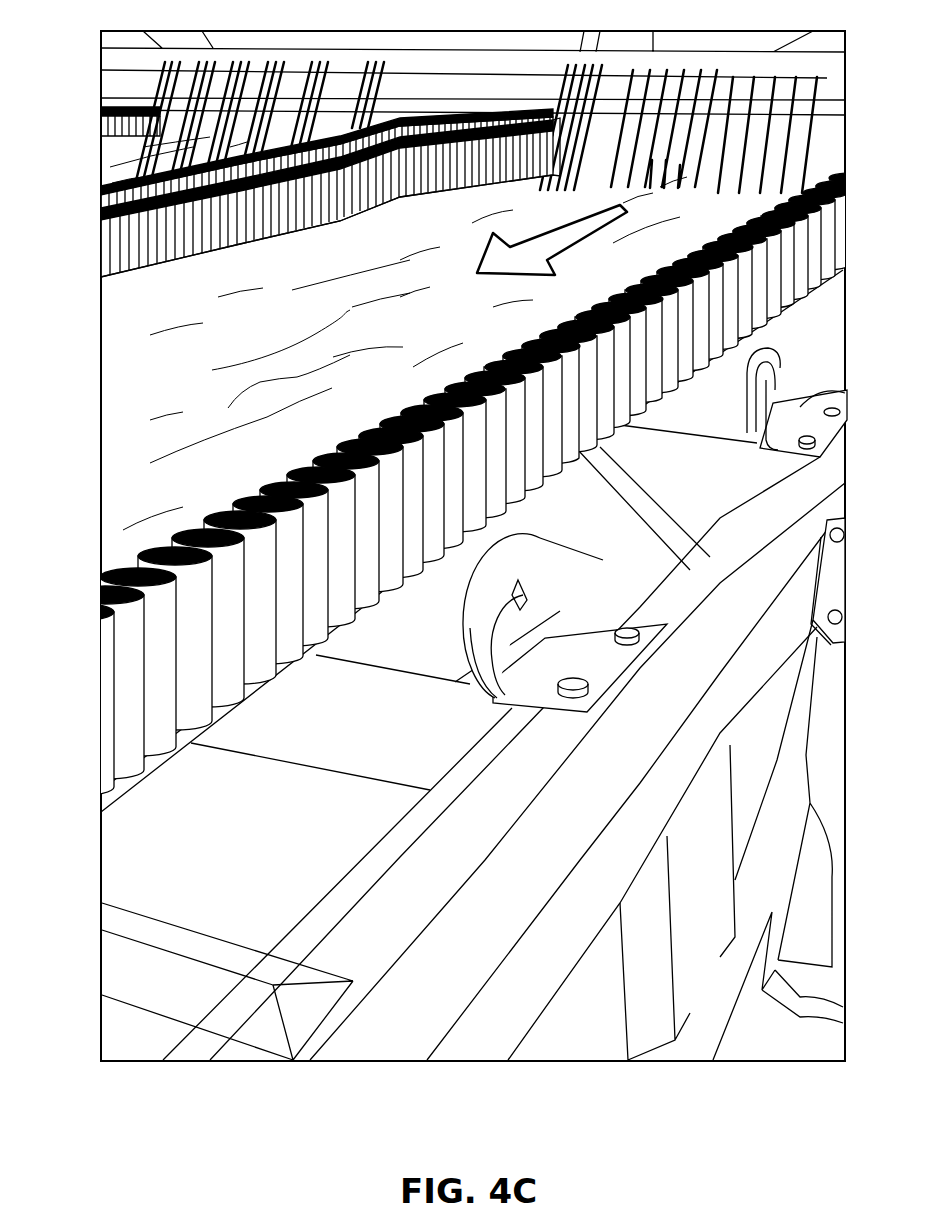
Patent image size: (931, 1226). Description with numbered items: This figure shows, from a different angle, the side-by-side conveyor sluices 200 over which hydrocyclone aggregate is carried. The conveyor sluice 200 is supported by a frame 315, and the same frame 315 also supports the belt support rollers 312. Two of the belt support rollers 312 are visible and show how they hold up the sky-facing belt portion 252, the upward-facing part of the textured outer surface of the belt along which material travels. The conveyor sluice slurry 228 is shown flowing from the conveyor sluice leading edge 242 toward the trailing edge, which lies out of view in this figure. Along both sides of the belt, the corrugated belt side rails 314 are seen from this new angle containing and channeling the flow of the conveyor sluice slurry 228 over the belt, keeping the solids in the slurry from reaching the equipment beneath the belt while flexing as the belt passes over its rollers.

The conveyor sluice 200 is at (180, 187).
The conveyor sluice slurry 228 is at (487, 309).
The conveyor sluice leading edge 242 is at (780, 143).
The sky-facing portion 252 is at (682, 348).
The belt support rollers 312 is at (542, 572).
The corrugated belt side rails 314 is at (287, 228).
The frame 315 is at (527, 913).